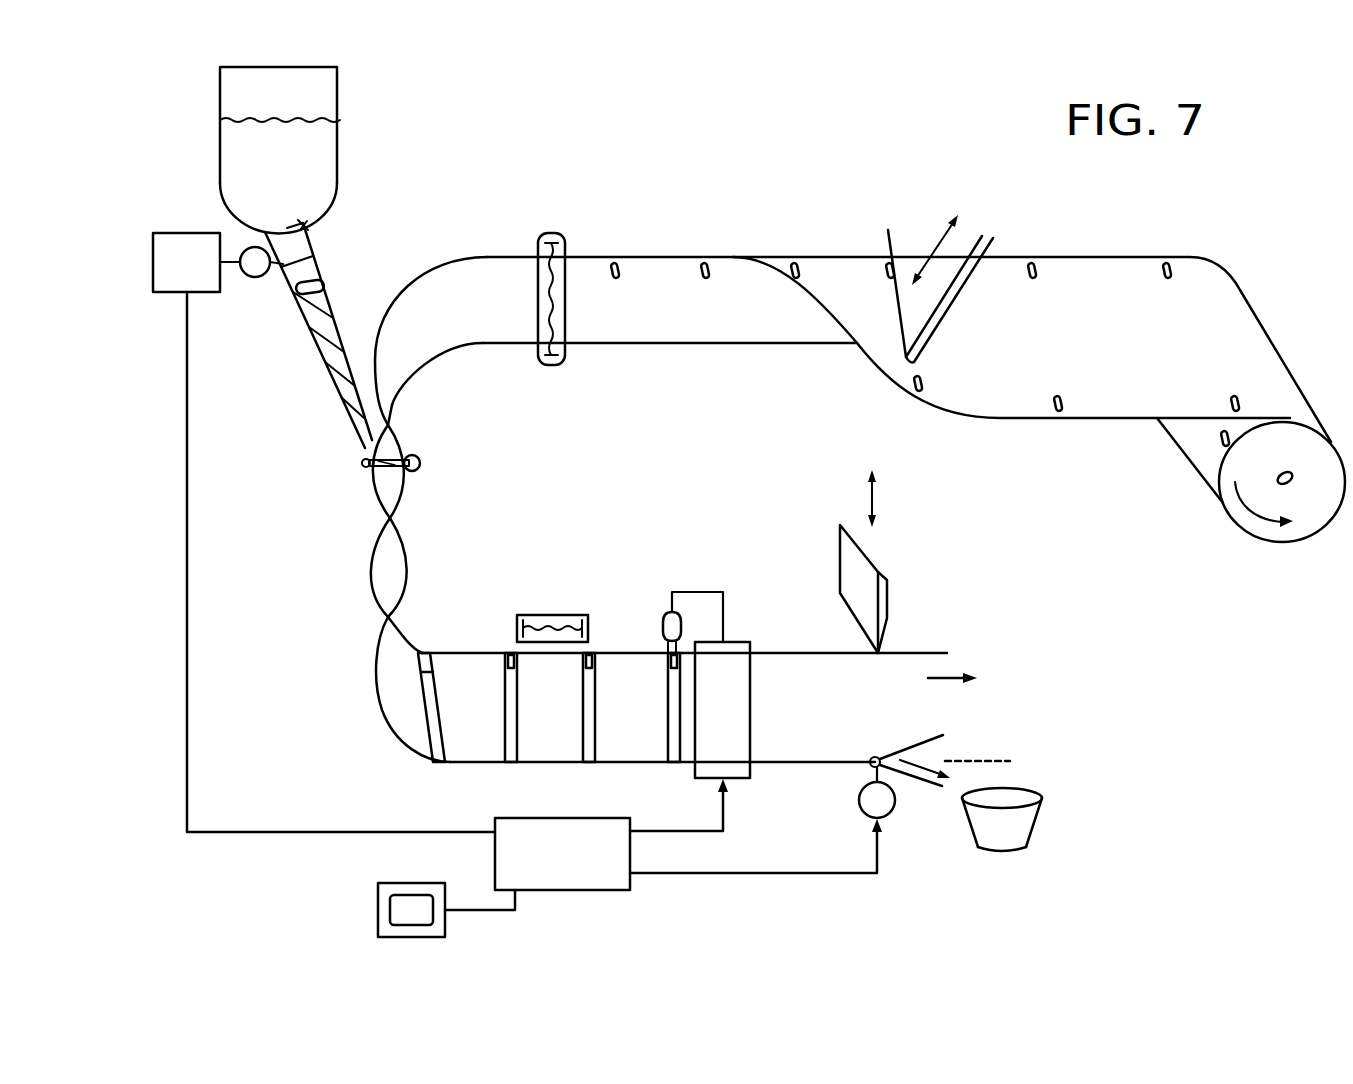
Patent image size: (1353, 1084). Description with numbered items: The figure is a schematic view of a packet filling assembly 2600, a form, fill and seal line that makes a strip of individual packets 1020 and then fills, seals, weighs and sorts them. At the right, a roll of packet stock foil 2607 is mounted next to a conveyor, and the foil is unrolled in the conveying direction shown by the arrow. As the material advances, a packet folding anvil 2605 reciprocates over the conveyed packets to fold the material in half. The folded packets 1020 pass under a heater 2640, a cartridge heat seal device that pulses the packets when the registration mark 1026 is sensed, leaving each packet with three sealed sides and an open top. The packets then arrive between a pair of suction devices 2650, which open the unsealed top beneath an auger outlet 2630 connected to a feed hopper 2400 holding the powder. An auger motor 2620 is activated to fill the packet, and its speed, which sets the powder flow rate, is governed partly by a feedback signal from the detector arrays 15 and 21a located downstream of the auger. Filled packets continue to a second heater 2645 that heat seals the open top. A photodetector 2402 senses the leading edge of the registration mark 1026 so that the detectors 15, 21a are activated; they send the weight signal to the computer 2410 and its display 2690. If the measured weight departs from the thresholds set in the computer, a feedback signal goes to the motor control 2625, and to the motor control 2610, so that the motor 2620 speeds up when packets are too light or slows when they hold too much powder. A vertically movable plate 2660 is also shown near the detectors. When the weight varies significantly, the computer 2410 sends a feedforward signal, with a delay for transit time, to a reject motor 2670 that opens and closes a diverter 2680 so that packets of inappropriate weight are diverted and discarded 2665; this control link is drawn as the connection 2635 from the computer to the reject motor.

The packet filling assembly 2600 is at (680, 165).
The feed hopper 2400 is at (332, 97).
The motor control 2610 is at (210, 274).
The auger motor 2620 is at (250, 278).
The auger outlet 2630 is at (350, 335).
The packets 1020 is at (673, 315).
The registration mark 1026 is at (700, 257).
The suction devices 2650 is at (420, 458).
The heater 2640 is at (555, 227).
The packet folding anvil 2605 is at (940, 272).
The roll of packet stock foil 2607 is at (1282, 482).
The second heater 2645 is at (525, 614).
The photodetector 2402 is at (657, 617).
The detector array 15 is at (733, 642).
The detector array 21a is at (747, 700).
The plate 2660 is at (845, 577).
The diverter 2680 is at (942, 754).
The motor 2670 is at (897, 800).
The discard 2665 is at (1023, 823).
The motor control 2625 is at (372, 830).
The computer 2410 is at (552, 850).
The wire 2635 is at (743, 873).
The display 2690 is at (418, 883).